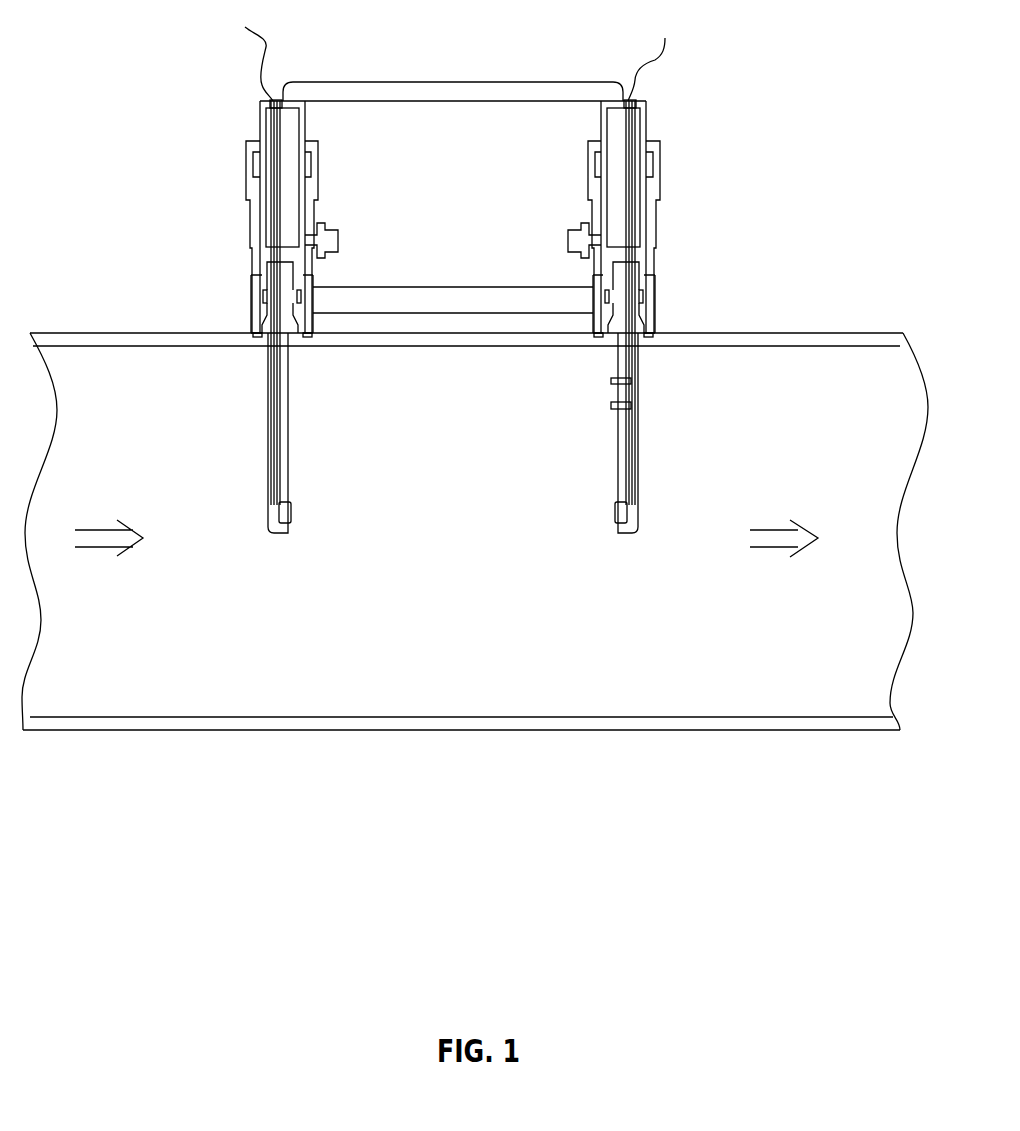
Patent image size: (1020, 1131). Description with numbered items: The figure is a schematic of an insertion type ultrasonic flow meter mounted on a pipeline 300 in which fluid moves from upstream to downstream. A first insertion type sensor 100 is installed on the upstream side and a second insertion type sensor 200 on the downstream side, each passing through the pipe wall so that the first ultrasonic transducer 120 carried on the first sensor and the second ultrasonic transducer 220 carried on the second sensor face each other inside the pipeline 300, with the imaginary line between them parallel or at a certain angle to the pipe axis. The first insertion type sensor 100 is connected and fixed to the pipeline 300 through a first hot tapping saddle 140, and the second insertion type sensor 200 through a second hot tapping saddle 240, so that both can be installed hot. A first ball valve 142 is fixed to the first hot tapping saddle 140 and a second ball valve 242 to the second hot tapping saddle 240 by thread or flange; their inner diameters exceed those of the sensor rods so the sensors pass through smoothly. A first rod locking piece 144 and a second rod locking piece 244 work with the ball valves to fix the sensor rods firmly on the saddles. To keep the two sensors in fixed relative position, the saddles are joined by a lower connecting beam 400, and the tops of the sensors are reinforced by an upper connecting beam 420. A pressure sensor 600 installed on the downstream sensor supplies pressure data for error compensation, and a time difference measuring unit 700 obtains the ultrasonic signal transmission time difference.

The first insertion type sensor 100 is at (268, 476).
The first ultrasonic transducer 120 is at (291, 513).
The first hot tapping saddle 140 is at (250, 302).
The first ball valve 142 is at (318, 228).
The first rod locking piece 144 is at (247, 163).
The second insertion type sensor 200 is at (638, 478).
The second ultrasonic transducer 220 is at (614, 514).
The second hot tapping saddle 240 is at (655, 302).
The second ball valve 242 is at (588, 228).
The second rod locking piece 244 is at (658, 162).
The pipeline 300 is at (793, 333).
The lower connecting beam 400 is at (453, 287).
The upper connecting beam 420 is at (453, 82).
The pressure sensor 600 is at (611, 407).
The time difference measuring unit 700 is at (632, 386).